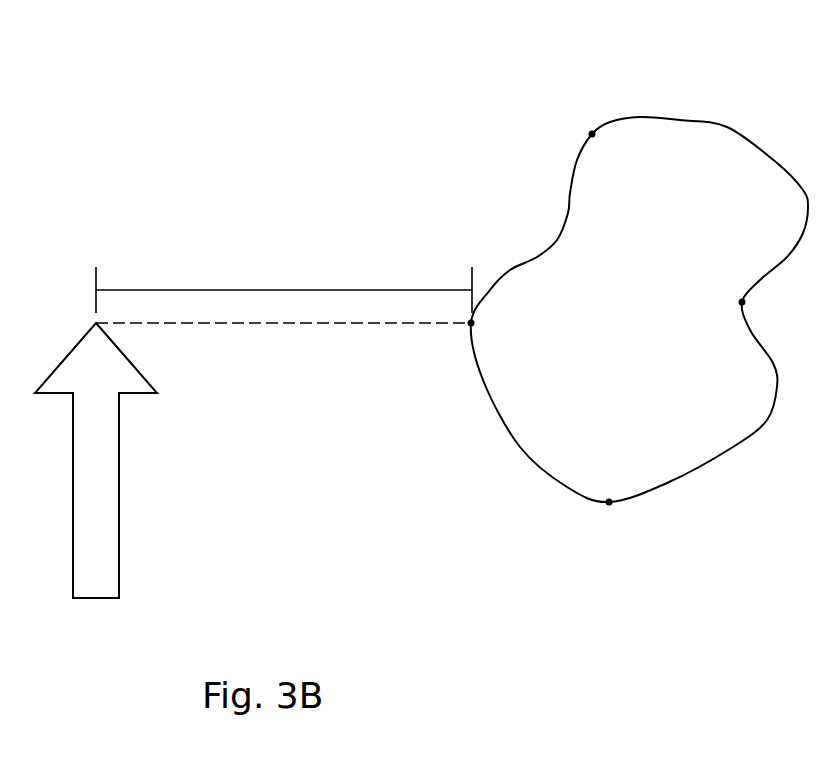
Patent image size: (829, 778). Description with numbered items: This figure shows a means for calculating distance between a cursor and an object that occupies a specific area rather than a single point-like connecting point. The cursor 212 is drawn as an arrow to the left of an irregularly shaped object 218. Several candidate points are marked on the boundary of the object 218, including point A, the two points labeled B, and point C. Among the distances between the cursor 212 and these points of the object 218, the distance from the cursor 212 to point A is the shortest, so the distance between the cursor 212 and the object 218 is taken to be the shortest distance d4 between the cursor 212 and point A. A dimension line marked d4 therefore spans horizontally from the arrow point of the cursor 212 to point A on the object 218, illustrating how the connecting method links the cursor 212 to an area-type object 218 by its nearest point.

The cursor 212 is at (95, 472).
The object 218 is at (708, 157).
The point A of the object A is at (471, 323).
The point B of the object B is at (592, 134).
The point C of the object C is at (742, 302).
The shortest distance d4 is at (284, 286).